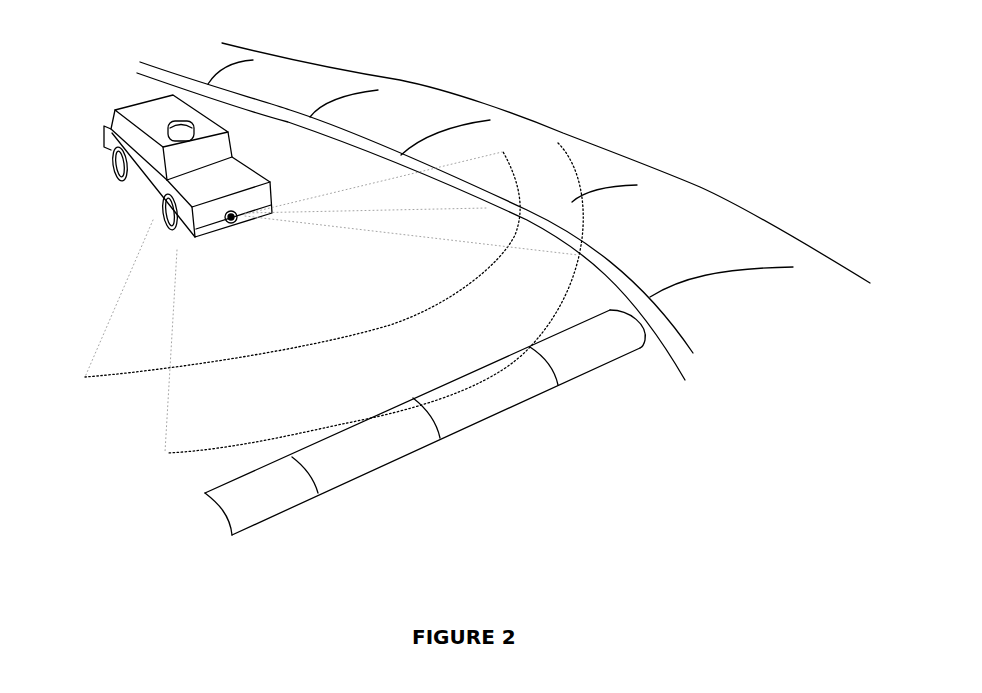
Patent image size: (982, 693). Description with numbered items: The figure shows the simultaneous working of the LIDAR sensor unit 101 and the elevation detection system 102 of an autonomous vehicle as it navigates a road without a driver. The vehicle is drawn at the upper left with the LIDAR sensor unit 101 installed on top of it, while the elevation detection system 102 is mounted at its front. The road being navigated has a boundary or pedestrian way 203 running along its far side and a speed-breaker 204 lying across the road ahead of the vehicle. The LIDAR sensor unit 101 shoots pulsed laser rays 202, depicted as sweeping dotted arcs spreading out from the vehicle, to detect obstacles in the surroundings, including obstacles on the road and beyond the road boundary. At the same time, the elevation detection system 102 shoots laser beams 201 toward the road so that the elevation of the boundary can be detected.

The LIDAR sensor unit 101 is at (167, 123).
The elevation detection system 102 is at (232, 192).
The laser beams 201 is at (403, 154).
The pulsed laser rays 202 is at (561, 140).
The boundary or pedestrian way 203 is at (797, 231).
The speed-breaker 204 is at (440, 438).